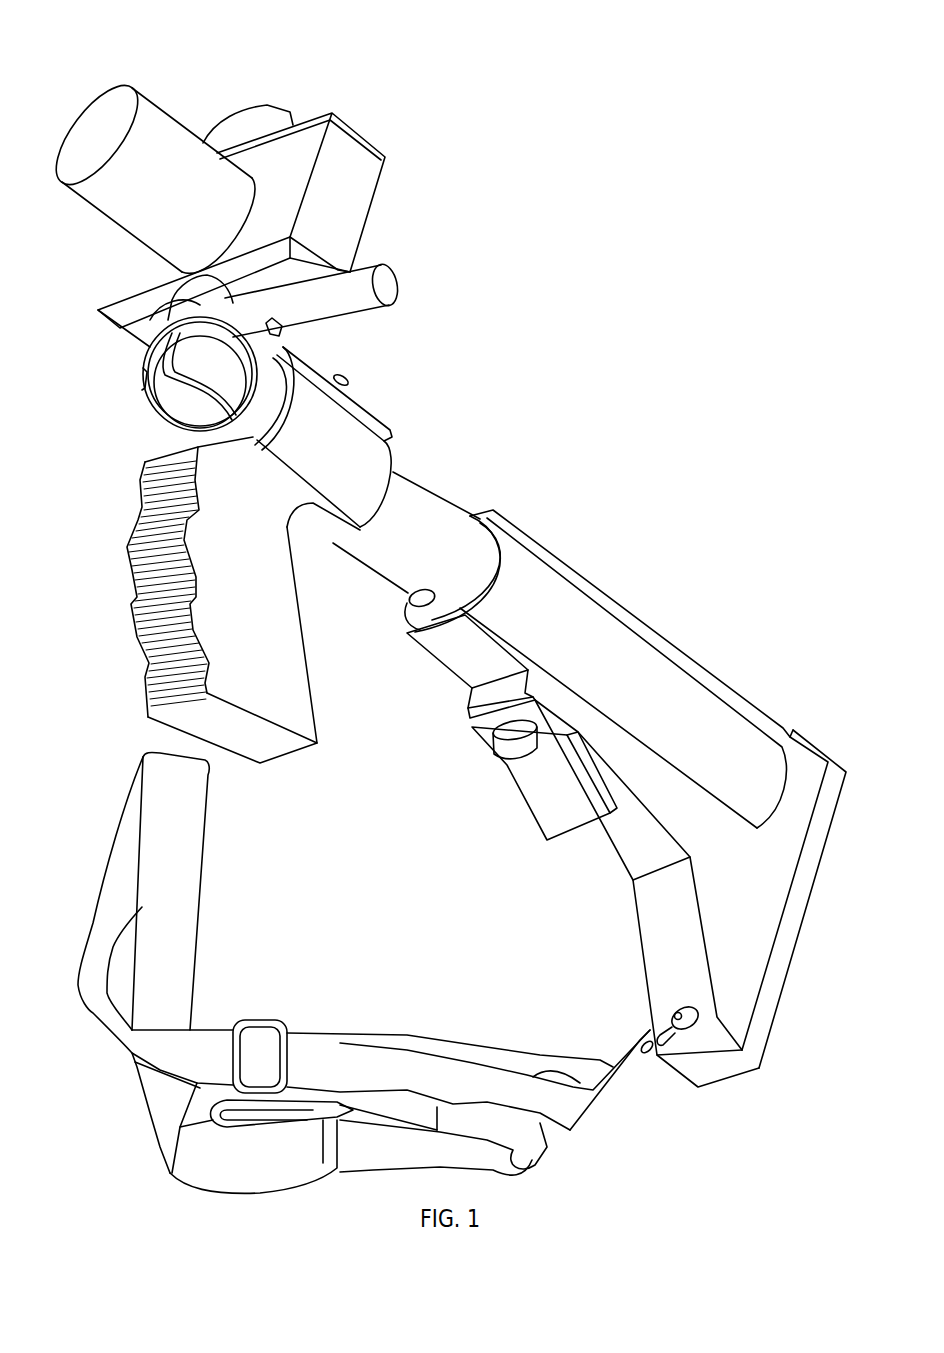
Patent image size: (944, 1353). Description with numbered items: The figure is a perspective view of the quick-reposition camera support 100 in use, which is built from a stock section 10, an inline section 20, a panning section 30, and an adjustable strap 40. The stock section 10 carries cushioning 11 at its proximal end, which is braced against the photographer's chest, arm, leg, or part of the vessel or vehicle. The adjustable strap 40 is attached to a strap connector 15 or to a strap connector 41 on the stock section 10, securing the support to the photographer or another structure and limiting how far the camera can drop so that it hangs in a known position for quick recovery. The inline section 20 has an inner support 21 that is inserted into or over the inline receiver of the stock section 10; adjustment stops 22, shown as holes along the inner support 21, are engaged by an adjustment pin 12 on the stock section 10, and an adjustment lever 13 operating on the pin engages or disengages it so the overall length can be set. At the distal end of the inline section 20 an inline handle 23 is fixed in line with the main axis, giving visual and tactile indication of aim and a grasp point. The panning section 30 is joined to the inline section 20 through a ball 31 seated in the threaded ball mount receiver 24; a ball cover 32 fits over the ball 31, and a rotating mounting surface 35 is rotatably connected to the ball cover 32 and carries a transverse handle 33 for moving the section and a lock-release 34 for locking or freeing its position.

The quick-reposition camera support 100 is at (731, 306).
The stock section 10 is at (757, 643).
The cushioning 11 is at (837, 770).
The adjustment pin 12 is at (507, 753).
The adjustment lever 13 is at (542, 812).
The strap connector 15 is at (685, 1008).
The inline section 20 is at (377, 402).
The inner support 21 is at (413, 507).
The adjustment stops 22 is at (415, 597).
The inline handle 23 is at (290, 637).
The ball mount receiver 24 is at (257, 413).
The panning section 30 is at (100, 353).
The ball 31 is at (175, 415).
The ball cover 32 is at (142, 380).
The transverse handle 33 is at (390, 288).
The lock-release 34 is at (281, 332).
The rotating mounting surface 35 is at (173, 315).
The adjustable strap 40 is at (477, 1013).
The strap connector 41 is at (346, 378).